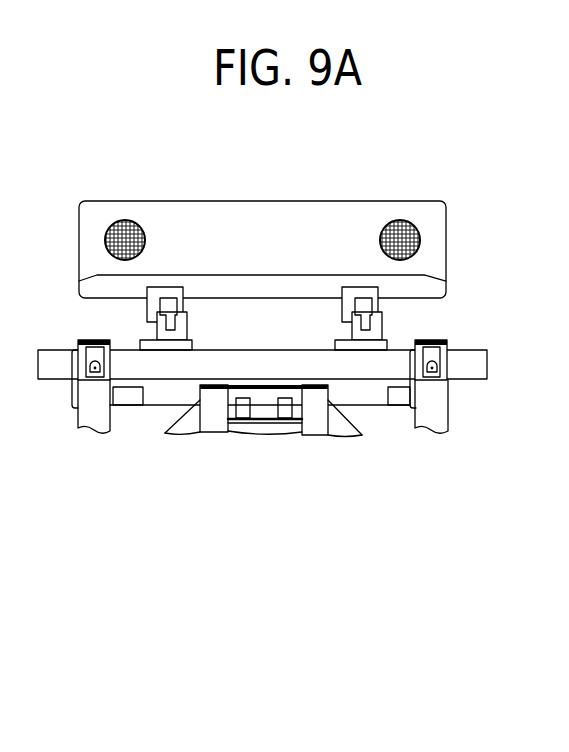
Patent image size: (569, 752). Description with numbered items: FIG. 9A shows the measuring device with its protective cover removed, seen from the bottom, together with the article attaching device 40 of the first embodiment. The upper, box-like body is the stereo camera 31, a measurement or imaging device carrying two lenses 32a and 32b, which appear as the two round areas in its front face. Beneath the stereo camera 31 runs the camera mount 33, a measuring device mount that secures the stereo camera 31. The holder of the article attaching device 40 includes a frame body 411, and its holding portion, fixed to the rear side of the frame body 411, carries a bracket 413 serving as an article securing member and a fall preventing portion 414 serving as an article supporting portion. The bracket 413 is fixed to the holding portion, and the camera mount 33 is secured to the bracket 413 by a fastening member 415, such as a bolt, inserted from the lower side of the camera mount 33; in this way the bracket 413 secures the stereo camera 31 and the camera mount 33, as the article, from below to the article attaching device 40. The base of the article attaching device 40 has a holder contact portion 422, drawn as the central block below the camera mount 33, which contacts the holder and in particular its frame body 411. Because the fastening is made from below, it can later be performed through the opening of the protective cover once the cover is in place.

The stereo camera 31 is at (278, 219).
The lens 32a is at (129, 220).
The lens 32b is at (396, 220).
The camera mount 33 is at (475, 368).
The article attaching device 40 is at (331, 461).
The frame body 411 is at (372, 395).
The bracket 413 is at (437, 356).
The fall preventing portion 414 is at (431, 339).
The fastening member 415 is at (435, 366).
The holder contact portion 422 is at (268, 407).